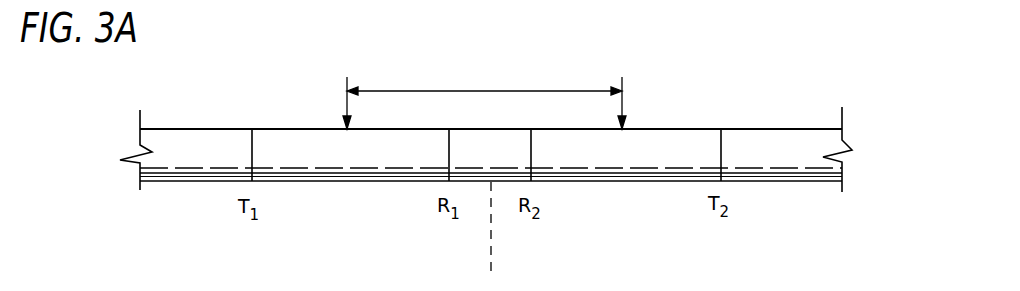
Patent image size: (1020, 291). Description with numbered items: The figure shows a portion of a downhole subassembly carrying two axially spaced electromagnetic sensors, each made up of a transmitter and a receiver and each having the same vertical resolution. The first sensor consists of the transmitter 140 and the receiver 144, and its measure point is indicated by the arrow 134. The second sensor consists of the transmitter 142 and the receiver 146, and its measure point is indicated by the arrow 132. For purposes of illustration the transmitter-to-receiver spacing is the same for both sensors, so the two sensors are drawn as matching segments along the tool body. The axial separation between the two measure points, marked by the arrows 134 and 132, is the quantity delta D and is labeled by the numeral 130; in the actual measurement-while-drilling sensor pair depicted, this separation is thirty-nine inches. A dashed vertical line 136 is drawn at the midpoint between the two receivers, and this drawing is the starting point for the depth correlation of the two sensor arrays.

The separation of the two sensor measure points 130 is at (558, 90).
The arrow 132 is at (622, 100).
The arrow 134 is at (347, 102).
The center line of receiver pair 136 is at (491, 250).
The transmitter 140 is at (252, 168).
The transmitter 142 is at (721, 168).
The receiver 144 is at (449, 168).
The receiver 146 is at (531, 168).